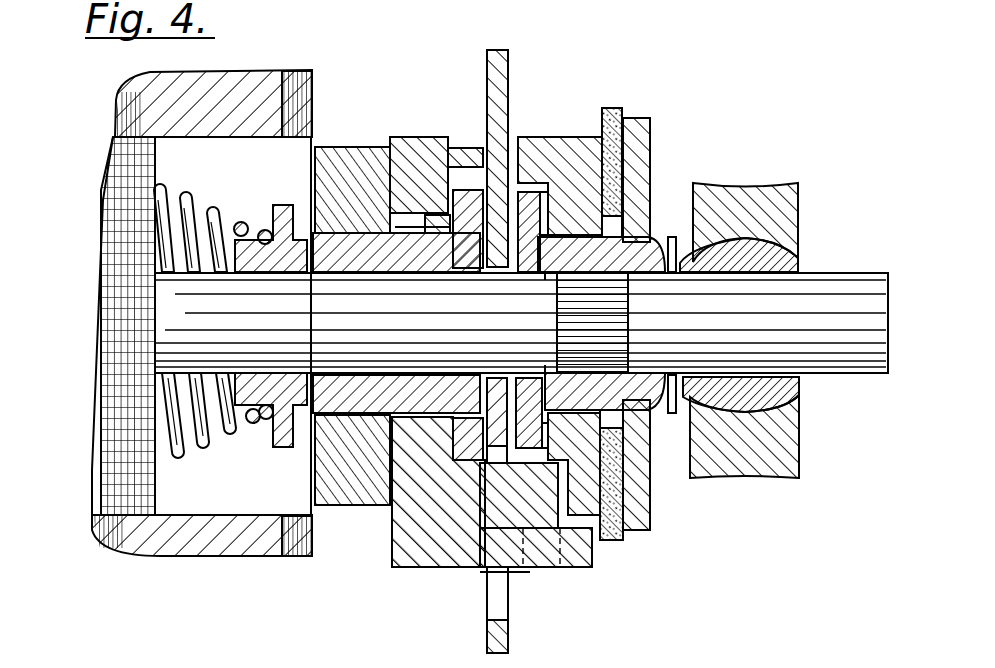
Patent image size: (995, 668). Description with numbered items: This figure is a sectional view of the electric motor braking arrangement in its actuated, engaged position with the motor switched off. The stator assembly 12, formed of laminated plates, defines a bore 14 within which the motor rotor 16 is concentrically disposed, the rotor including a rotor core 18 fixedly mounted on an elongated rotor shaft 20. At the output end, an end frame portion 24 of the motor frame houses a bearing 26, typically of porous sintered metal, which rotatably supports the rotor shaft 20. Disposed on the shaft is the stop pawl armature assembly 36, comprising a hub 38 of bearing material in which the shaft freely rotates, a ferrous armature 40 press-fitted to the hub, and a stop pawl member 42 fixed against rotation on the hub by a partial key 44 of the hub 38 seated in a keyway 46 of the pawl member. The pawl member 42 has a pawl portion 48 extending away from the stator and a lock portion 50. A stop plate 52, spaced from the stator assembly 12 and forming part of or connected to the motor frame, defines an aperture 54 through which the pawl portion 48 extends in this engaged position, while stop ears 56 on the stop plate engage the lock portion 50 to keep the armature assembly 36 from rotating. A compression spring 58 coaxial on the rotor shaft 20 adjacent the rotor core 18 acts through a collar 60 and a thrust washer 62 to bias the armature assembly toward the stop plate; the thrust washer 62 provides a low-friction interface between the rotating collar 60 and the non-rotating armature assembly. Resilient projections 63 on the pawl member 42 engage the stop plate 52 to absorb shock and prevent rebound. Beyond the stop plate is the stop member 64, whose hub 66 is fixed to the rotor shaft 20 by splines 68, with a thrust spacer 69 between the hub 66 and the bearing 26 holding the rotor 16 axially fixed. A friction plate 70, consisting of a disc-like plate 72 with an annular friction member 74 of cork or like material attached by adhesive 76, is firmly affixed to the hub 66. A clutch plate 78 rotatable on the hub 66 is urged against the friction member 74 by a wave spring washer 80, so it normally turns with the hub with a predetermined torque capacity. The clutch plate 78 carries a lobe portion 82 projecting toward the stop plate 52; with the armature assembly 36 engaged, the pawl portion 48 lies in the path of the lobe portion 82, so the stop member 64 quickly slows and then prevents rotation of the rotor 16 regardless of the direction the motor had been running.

The stator assembly 12 is at (200, 76).
The bore 14 is at (244, 132).
The motor rotor 16 is at (88, 366).
The rotor core 18 is at (125, 190).
The rotor shaft 20 is at (845, 375).
The end frame portion 24 is at (780, 200).
The bearing 26 is at (770, 258).
The stop pawl armature assembly 36 is at (381, 512).
The hub 38 is at (342, 397).
The armature 40 is at (340, 147).
The stop pawl member 42 is at (446, 578).
The partial key 44 is at (408, 237).
The keyway 46 is at (392, 216).
The pawl portion 48 is at (527, 535).
The lock portion 50 is at (592, 562).
The stop plate 52 is at (508, 60).
The aperture 54 is at (508, 625).
The stop ear 56 is at (550, 576).
The compression spring 58 is at (185, 196).
The collar 60 is at (262, 216).
The thrust washer 62 is at (302, 226).
The projections 63 is at (468, 142).
The stop member 64 is at (662, 100).
The hub 66 is at (655, 267).
The splines 68 is at (630, 323).
The thrust spacer 69 is at (672, 237).
The friction plate 70 is at (630, 535).
The disc-like plate 72 is at (655, 516).
The annular friction member 74 is at (612, 108).
The adhesive 76 is at (630, 150).
The clutch plate 78 is at (567, 130).
The wave spring washer 80 is at (545, 413).
The lobe portion 82 is at (530, 140).